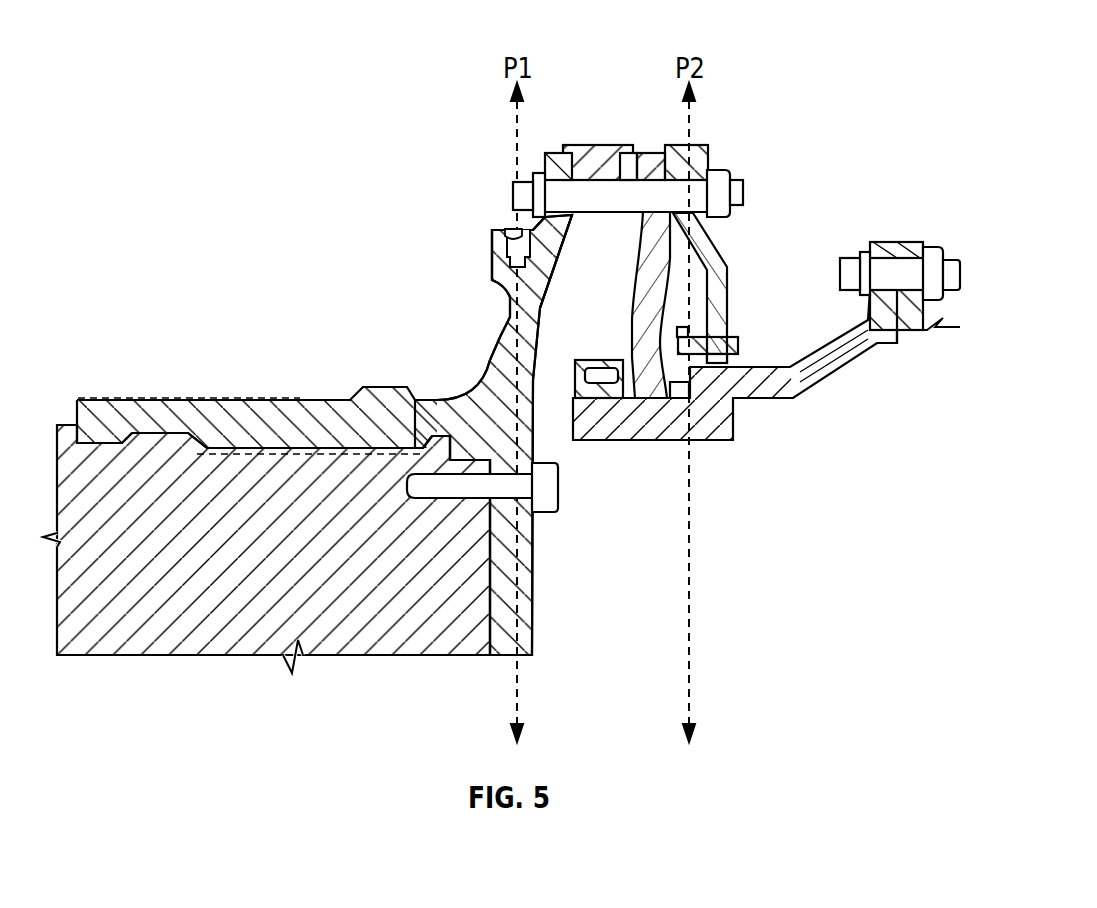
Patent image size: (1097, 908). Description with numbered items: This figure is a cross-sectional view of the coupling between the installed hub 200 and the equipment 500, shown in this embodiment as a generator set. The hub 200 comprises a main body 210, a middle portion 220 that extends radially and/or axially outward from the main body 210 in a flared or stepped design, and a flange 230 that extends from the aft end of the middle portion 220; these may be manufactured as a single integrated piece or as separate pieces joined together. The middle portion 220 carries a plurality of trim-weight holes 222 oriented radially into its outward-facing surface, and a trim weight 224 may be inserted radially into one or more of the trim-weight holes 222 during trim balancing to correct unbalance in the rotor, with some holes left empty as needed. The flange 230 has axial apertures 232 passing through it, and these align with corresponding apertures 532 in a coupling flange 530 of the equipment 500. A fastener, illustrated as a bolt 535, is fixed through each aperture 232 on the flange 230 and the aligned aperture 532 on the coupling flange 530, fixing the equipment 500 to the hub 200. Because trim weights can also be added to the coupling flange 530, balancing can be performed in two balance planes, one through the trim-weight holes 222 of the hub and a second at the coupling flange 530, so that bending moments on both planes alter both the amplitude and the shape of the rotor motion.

The hub 200 is at (384, 380).
The main body 210 is at (307, 397).
The middle portion 220 is at (497, 350).
The trim-weight hole 222 is at (492, 247).
The trim weight 224 is at (514, 229).
The flange 230 is at (549, 157).
The aperture 232 is at (553, 215).
The equipment 500 is at (868, 60).
The coupling flange 530 is at (697, 152).
The aperture 532 is at (695, 228).
The bolt 535 is at (632, 200).